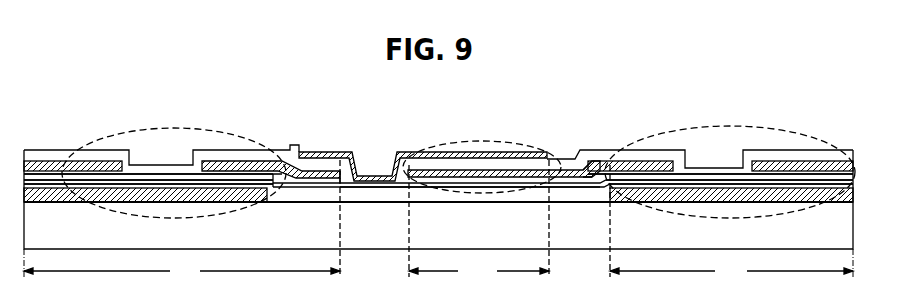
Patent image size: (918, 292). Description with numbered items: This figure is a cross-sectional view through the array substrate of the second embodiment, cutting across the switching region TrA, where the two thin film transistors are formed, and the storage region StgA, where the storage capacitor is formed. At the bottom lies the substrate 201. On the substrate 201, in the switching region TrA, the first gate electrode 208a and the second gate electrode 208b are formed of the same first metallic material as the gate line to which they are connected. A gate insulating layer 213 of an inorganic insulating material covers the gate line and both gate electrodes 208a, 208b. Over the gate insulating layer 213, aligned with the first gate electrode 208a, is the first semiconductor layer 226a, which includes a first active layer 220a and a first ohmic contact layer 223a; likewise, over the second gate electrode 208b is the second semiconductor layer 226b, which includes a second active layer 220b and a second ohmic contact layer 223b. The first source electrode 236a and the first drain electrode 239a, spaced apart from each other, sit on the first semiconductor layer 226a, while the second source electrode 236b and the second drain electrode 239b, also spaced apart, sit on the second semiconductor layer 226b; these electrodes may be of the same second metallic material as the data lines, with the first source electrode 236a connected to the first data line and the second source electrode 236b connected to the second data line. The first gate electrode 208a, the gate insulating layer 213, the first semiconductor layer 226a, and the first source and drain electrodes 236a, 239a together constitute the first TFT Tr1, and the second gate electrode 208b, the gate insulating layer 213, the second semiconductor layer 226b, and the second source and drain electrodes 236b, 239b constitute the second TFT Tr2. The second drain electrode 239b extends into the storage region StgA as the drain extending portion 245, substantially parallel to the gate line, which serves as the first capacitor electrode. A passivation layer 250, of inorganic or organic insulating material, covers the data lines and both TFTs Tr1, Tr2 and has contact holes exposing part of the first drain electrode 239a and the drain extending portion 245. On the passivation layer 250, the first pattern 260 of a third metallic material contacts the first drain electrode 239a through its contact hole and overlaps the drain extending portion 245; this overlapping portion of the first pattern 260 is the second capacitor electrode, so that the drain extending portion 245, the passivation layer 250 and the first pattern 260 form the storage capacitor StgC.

The substrate 201 is at (842, 236).
The first gate electrode 208a is at (115, 203).
The second gate electrode 208b is at (715, 203).
The gate insulating layer 213 is at (428, 189).
The first active layer 220a is at (238, 176).
The second active layer 220b is at (610, 177).
The first ohmic contact layer 223a is at (263, 173).
The second ohmic contact layer 223b is at (635, 173).
The first semiconductor layer 226a is at (268, 182).
The second semiconductor layer 226b is at (604, 186).
The first source electrode 236a is at (82, 162).
The second source electrode 236b is at (788, 162).
The first drain electrode 239a is at (233, 162).
The second drain electrode 239b is at (617, 164).
The drain extending portion 245 is at (473, 178).
The passivation layer 250 is at (575, 172).
The first pattern 260 is at (448, 152).
The first TFT Tr1 is at (168, 128).
The second TFT Tr2 is at (710, 127).
The storage capacitor StgC is at (483, 140).
The switching region TrA is at (438, 270).
The storage region StgA is at (479, 270).